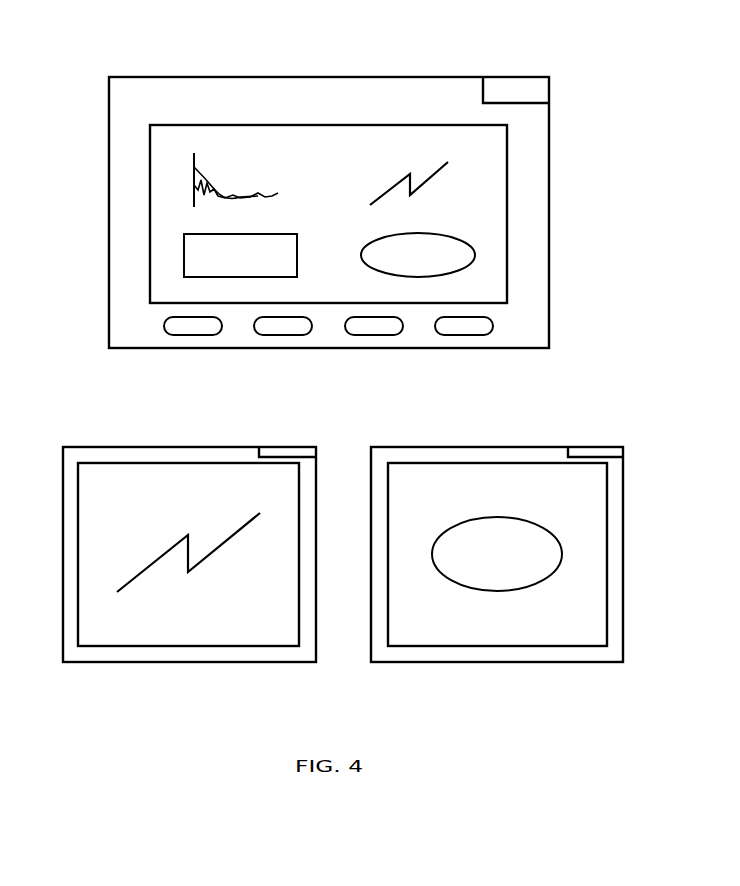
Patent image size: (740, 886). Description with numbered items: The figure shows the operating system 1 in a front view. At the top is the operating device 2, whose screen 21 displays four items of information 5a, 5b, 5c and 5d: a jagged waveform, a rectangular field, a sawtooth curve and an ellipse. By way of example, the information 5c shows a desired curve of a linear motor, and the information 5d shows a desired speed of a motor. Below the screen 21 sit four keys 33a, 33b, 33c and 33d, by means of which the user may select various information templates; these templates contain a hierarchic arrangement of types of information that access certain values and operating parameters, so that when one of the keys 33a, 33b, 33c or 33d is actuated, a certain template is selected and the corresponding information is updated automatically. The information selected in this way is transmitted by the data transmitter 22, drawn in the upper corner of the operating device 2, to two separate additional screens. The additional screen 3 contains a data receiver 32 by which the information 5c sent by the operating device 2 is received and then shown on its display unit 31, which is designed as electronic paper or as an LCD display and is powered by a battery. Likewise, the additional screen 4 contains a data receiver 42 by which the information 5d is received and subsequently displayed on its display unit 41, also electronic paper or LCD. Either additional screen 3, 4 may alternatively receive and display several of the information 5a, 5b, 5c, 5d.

The operating system 1 is at (134, 719).
The operating device 2 is at (130, 42).
The screen 21 is at (487, 180).
The data transmitter 22 is at (540, 92).
The information 5a is at (194, 168).
The information 5b is at (184, 255).
The information 5c is at (385, 190).
The information 5d is at (475, 255).
The key 33a is at (192, 328).
The key 33b is at (283, 328).
The key 33c is at (373, 328).
The key 33d is at (463, 328).
The additional screen 3 is at (210, 660).
The display unit 31 is at (268, 612).
The data receiver 32 is at (292, 451).
The additional screen 4 is at (518, 660).
The display unit 41 is at (577, 612).
The data receiver 42 is at (600, 451).